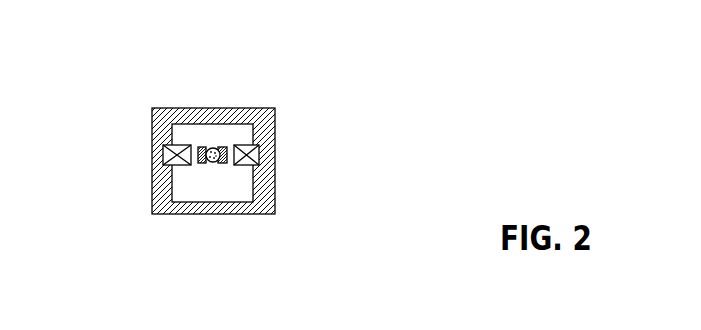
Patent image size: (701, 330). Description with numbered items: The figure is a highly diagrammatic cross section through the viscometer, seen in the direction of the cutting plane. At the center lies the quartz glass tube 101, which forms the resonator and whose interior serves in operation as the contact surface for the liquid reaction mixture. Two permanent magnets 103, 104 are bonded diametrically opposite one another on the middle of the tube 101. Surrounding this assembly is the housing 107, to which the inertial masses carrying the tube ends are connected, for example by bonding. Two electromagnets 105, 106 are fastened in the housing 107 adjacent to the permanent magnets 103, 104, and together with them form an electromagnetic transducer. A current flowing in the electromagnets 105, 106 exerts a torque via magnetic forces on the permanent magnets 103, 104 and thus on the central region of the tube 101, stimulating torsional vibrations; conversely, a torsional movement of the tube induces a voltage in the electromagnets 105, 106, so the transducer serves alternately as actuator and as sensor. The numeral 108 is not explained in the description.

The quartz glass tube 101 is at (215, 147).
The permanent magnet 103 is at (202, 163).
The permanent magnet 104 is at (223, 163).
The electromagnet 105 is at (173, 155).
The electromagnet 106 is at (272, 135).
The housing 107 is at (268, 198).
The housing 108 is at (250, 107).